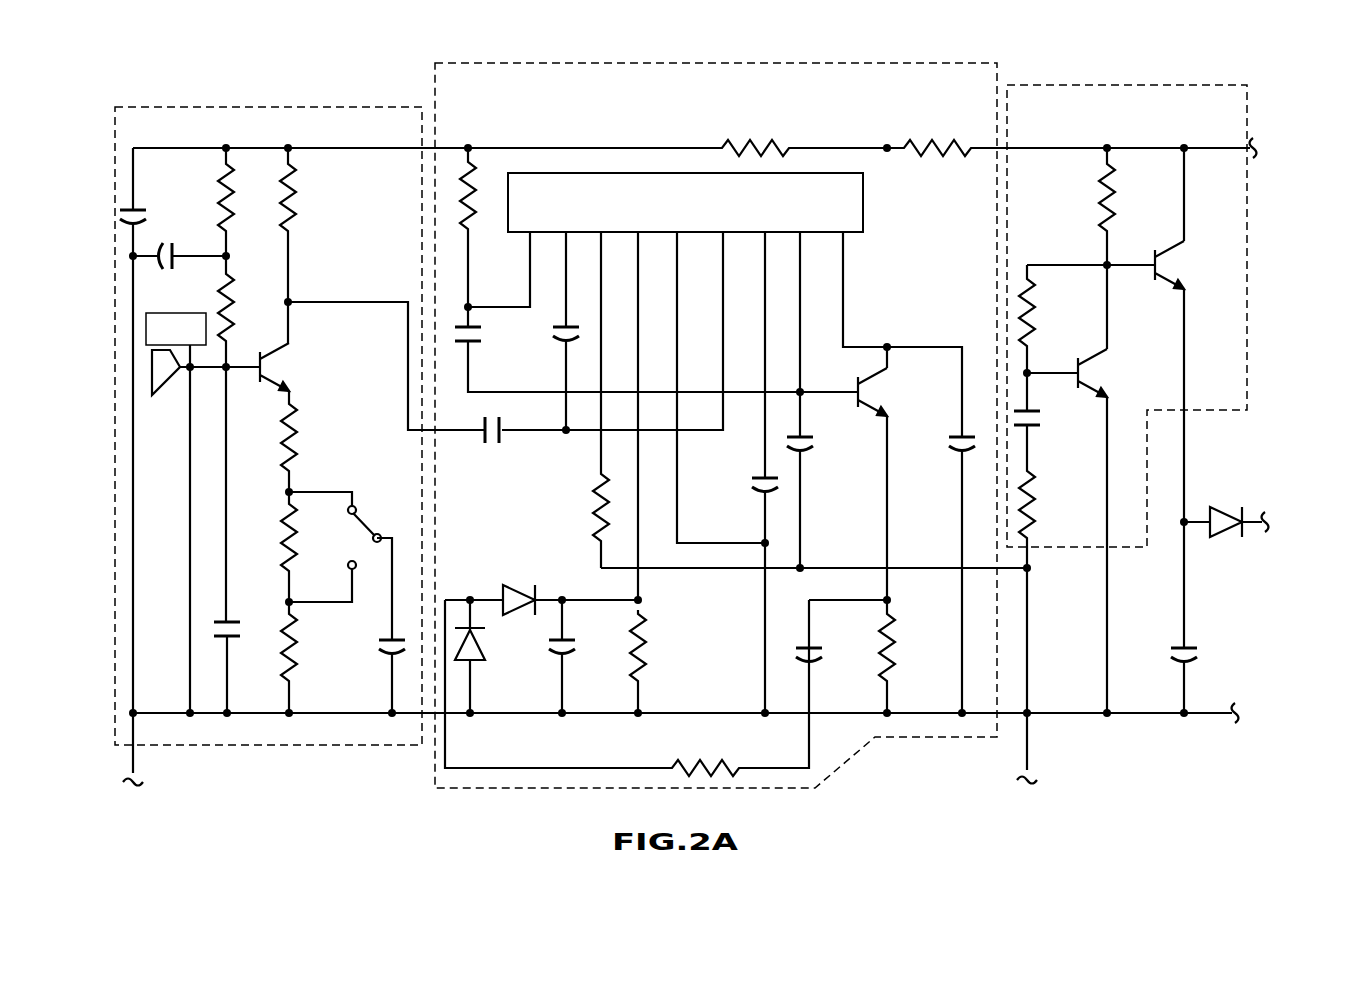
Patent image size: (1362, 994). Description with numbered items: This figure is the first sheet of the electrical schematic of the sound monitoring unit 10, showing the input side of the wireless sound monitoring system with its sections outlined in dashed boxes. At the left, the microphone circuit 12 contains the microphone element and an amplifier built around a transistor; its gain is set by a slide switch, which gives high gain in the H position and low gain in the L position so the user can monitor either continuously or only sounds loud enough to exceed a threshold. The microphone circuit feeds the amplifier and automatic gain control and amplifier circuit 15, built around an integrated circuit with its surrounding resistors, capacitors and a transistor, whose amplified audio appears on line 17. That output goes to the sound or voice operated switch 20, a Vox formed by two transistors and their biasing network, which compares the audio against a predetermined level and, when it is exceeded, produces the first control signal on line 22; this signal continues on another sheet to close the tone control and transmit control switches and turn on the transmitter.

The sound monitoring unit 10 is at (110, 75).
The microphone circuit 12 is at (220, 122).
The amplifier and automatic gain control and amplifier circuit 15 is at (510, 95).
The output line 17 is at (913, 568).
The sound or voice operated switch (Vox) 20 is at (1085, 120).
The output line of sound switch 22 is at (1186, 355).